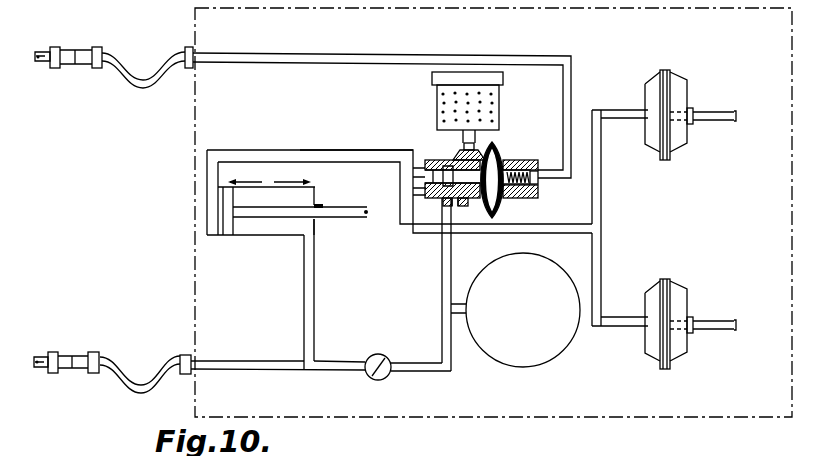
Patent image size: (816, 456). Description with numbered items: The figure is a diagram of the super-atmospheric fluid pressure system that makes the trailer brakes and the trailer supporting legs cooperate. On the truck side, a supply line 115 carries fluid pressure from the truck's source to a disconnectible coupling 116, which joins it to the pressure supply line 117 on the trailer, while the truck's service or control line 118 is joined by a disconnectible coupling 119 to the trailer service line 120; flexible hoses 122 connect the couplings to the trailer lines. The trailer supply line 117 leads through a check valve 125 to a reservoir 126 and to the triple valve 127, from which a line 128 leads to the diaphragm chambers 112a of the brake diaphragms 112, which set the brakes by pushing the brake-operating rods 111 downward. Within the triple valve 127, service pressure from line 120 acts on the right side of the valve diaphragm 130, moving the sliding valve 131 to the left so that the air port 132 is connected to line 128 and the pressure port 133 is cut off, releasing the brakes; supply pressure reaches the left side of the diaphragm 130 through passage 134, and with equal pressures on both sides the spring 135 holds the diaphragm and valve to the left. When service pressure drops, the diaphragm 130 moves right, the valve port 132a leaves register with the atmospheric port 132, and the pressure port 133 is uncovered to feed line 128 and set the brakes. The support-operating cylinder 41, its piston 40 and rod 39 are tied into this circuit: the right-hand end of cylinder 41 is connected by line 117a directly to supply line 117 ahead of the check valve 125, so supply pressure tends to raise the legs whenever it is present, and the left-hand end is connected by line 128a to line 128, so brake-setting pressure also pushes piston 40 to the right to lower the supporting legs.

The rod 39 is at (362, 211).
The piston 40 is at (224, 237).
The support-operating cylinder 41 is at (262, 237).
The brake-operating rod 111 is at (712, 121).
The diaphragm 112 is at (672, 95).
The diaphragm chamber 112a is at (652, 93).
The supply line 115 is at (41, 364).
The disconnectible coupling 116 is at (94, 332).
The pressure supply line 117 is at (251, 368).
The line 117a is at (313, 300).
The service or control line 118 is at (44, 58).
The disconnectible coupling 119 is at (69, 45).
The service line 120 is at (224, 63).
The hose 122 is at (135, 88).
The check valve 125 is at (380, 381).
The reservoir 126 is at (523, 310).
The triple valve 127 is at (493, 147).
The line 128 is at (420, 173).
The line 128a is at (311, 151).
The valve diaphragm 130 is at (497, 198).
The sliding valve 131 is at (462, 150).
The air port 132 is at (450, 152).
The valve port 132a is at (437, 161).
The pressure port 133 is at (428, 203).
The passage 134 is at (455, 208).
The spring 135 is at (514, 167).